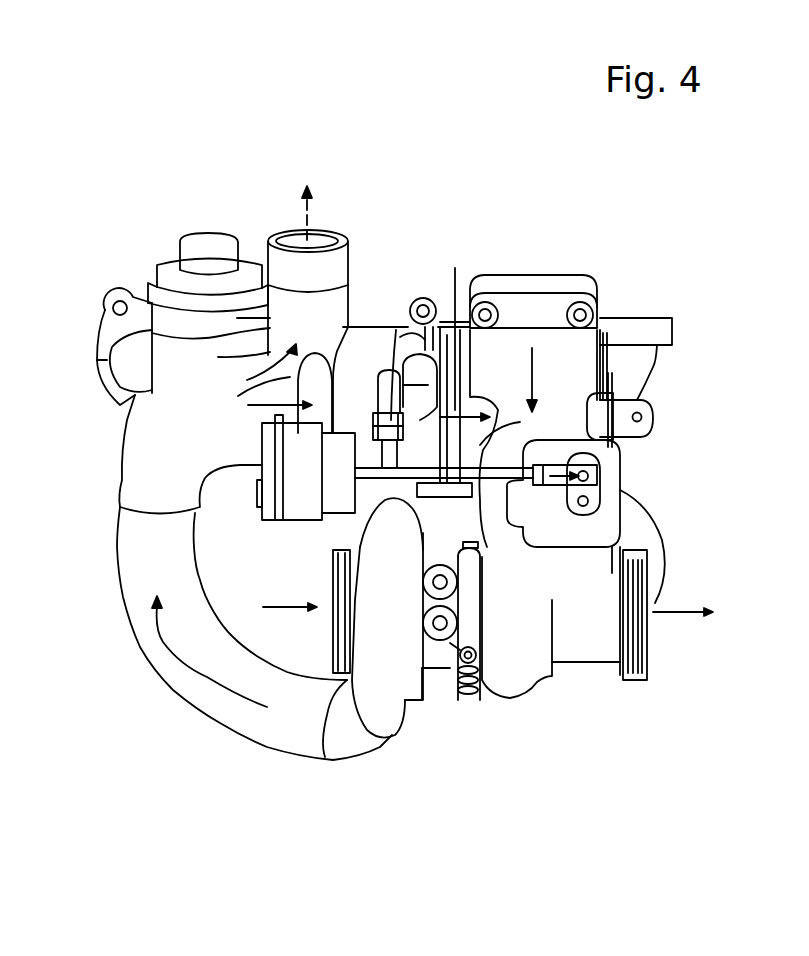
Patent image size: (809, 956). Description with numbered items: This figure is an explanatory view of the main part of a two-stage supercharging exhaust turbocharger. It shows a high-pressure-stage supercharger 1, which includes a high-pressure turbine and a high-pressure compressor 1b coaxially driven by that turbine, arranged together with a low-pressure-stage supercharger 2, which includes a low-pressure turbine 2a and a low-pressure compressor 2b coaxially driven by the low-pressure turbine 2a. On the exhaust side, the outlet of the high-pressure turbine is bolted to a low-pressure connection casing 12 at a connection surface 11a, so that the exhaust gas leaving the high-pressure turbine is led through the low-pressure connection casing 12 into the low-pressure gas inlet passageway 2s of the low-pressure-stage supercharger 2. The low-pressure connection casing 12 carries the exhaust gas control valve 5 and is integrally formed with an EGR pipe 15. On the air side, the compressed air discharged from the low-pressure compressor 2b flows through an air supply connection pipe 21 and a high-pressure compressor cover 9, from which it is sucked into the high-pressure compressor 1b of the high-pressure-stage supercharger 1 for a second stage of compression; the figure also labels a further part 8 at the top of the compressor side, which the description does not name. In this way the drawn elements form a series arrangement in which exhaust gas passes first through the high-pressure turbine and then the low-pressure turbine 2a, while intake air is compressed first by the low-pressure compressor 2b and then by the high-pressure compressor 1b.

The high-pressure-stage supercharger 1 is at (377, 316).
The high-pressure compressor 1b is at (308, 342).
The low-pressure-stage supercharger 2 is at (467, 712).
The low-pressure turbine 2a is at (545, 692).
The low-pressure compressor 2b is at (409, 748).
The low-pressure gas inlet passageway 2s is at (550, 574).
The exhaust gas control valve 5 is at (162, 230).
The compressor outlet pipe 8 is at (280, 263).
The high-pressure compressor cover 9 is at (136, 446).
The connection surface 11a is at (397, 322).
The low-pressure connection casing 12 is at (519, 275).
The EGR pipe 15 is at (627, 330).
The air supply connection pipe 21 is at (136, 610).